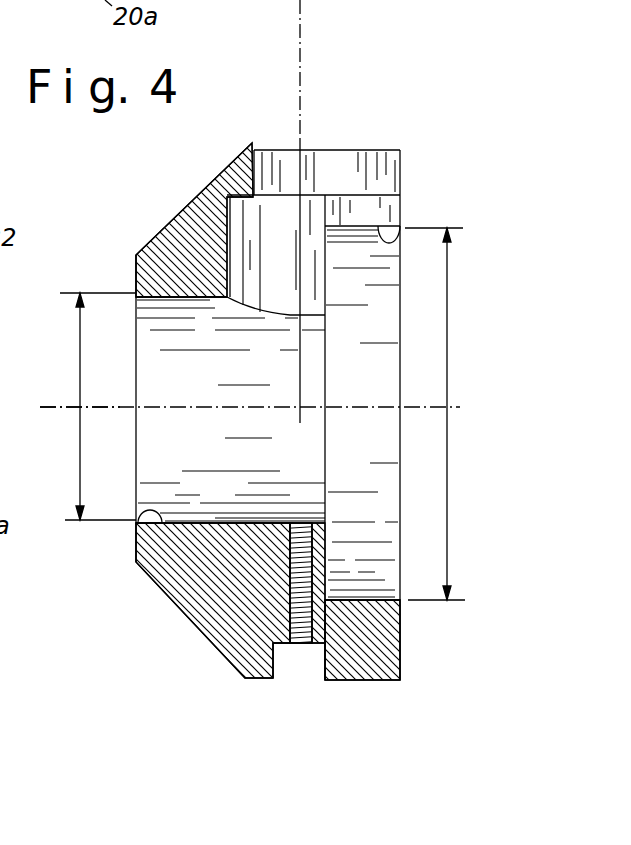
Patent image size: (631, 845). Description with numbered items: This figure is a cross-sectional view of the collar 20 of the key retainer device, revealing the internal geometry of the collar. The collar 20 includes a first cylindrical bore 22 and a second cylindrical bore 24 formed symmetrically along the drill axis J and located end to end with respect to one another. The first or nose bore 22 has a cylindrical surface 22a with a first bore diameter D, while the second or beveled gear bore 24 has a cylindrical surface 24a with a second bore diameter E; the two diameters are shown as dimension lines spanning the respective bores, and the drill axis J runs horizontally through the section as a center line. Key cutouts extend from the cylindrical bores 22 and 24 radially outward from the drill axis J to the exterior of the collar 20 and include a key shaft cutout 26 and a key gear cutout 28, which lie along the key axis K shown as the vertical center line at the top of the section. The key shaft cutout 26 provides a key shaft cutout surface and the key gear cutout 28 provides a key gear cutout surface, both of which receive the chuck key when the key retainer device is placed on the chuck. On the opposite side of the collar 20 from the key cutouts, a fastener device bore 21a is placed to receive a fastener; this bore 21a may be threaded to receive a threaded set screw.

The collar 20 is at (198, 627).
The fastener device bore 21a is at (306, 645).
The first cylindrical bore 22 is at (152, 366).
The cylindrical surface 22a is at (138, 523).
The second cylindrical bore 24 is at (351, 278).
The cylindrical surface 24a is at (408, 232).
The key shaft cutout 26 is at (288, 165).
The key gear cutout 28 is at (290, 228).
The key axis K is at (304, 38).
The drill axis J is at (61, 410).
The second bore diameter E is at (435, 414).
The first bore diameter D is at (98, 406).